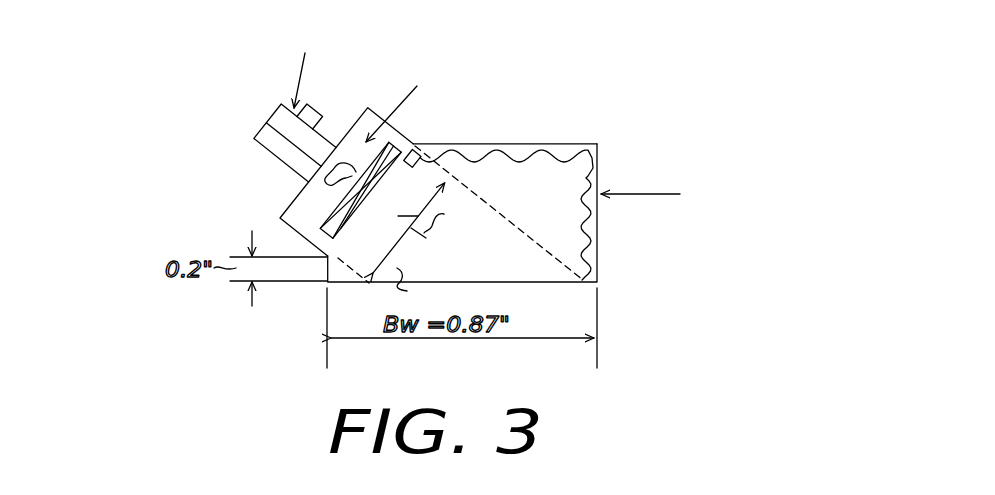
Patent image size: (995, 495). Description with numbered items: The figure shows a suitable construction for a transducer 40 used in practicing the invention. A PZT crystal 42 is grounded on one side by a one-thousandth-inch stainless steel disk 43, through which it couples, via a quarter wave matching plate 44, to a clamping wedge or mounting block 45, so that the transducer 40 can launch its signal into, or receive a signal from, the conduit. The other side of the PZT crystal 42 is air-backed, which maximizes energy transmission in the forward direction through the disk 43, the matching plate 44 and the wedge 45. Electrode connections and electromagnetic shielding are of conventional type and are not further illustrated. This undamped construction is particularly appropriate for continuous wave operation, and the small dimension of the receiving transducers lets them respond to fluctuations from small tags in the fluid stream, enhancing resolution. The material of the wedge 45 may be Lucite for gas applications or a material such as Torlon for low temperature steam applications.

The transducer 40 is at (252, 112).
The PZT crystal 42 is at (328, 209).
The stainless steel disk 43 is at (437, 143).
The quarter wave matching plate 44 is at (412, 148).
The clamping wedge or mounting block 45 is at (498, 251).